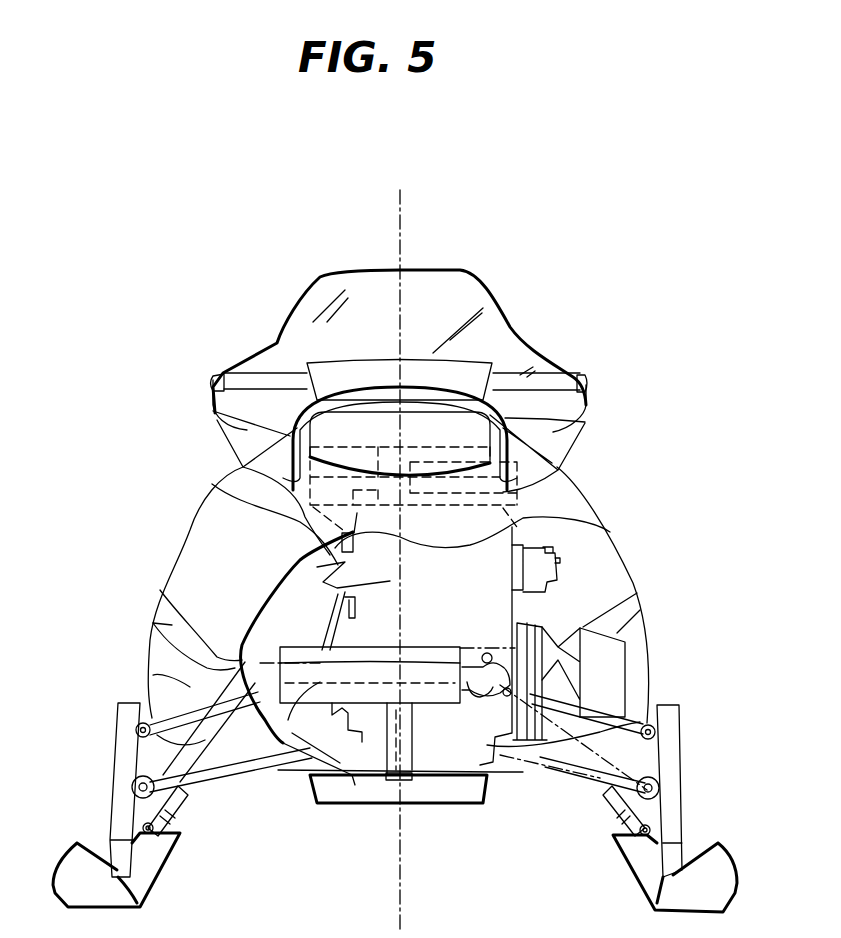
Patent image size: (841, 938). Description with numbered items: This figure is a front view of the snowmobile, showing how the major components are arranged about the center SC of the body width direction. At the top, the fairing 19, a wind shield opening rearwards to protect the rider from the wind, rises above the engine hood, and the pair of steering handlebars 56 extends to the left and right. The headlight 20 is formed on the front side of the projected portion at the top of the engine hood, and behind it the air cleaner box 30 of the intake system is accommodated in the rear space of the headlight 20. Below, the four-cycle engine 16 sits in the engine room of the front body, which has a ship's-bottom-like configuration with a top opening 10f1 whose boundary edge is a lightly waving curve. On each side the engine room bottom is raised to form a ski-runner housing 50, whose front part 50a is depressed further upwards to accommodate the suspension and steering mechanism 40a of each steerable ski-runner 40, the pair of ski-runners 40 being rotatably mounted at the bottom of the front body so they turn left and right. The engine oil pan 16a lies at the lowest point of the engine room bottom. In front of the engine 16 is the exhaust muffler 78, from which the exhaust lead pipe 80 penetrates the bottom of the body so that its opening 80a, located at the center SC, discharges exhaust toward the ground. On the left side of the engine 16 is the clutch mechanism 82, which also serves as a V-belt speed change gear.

The center of the body width direction SC is at (402, 215).
The fairing 19 is at (470, 300).
The steering handlebars 56 is at (213, 378).
The headlight 20 is at (460, 430).
The air cleaner box 30 is at (552, 462).
The four-cycle engine 16 is at (210, 483).
The exhaust muffler 78 is at (317, 645).
The top opening 10f1 is at (153, 623).
The front part of ski-runner house 50a is at (148, 633).
The ski-runner housing 50 is at (147, 680).
The steering mechanism 40a is at (98, 773).
The steerable ski-runner 40 is at (60, 858).
The clutch mechanism 82 is at (603, 682).
The exhaust lead pipe 80 is at (385, 760).
The opening 80a is at (397, 782).
The engine oil pan 16a is at (445, 757).